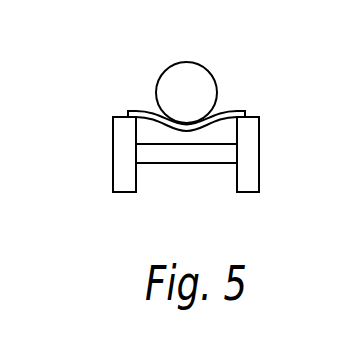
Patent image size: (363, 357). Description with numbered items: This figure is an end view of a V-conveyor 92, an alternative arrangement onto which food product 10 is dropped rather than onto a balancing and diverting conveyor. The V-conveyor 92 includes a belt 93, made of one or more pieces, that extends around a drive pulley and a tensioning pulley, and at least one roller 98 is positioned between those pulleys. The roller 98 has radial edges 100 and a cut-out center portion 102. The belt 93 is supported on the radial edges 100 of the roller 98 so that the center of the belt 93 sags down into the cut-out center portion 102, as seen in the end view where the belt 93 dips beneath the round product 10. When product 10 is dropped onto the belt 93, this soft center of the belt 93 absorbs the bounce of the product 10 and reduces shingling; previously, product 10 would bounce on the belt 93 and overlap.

The product 10 is at (200, 63).
The V-conveyor 92 is at (292, 34).
The belt 93 is at (240, 110).
The roller 98 is at (192, 163).
The radial edges 100 is at (120, 125).
The cut-out center portion 102 is at (152, 135).